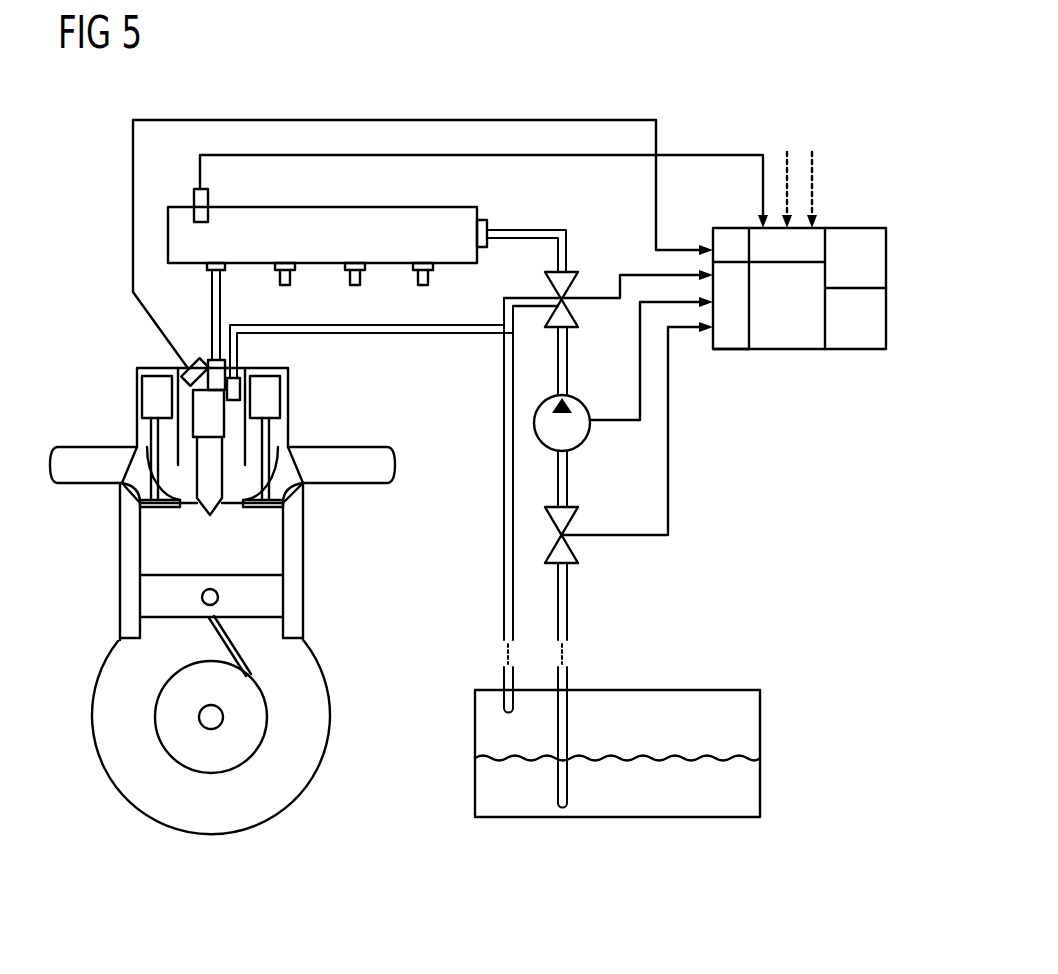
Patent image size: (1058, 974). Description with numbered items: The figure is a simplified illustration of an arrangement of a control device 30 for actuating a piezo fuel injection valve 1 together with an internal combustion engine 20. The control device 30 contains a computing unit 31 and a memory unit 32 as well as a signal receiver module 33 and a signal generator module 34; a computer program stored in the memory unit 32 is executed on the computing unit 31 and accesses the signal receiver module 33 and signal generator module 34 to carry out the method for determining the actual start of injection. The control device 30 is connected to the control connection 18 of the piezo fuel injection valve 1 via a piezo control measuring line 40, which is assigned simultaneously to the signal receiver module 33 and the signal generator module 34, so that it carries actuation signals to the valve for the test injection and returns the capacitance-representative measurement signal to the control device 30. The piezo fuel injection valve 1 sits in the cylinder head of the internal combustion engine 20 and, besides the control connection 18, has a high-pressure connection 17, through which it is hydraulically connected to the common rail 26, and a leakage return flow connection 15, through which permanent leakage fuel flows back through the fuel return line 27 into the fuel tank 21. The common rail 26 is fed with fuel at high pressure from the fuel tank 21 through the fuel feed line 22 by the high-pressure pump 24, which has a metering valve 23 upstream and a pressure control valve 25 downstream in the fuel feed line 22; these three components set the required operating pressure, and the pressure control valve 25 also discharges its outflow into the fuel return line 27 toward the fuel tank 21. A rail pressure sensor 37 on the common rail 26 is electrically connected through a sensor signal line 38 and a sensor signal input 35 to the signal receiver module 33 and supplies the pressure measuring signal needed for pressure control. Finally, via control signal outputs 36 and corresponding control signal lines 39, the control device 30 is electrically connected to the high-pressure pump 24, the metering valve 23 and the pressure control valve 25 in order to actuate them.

The piezo fuel injection valve 1 is at (213, 413).
The leakage return flow connection 15 is at (233, 390).
The high-pressure connection 17 is at (207, 362).
The control connection 18 is at (183, 369).
The internal combustion engine 20 is at (340, 560).
The fuel tank 21 is at (683, 702).
The fuel feed line 22 is at (568, 600).
The metering valve 23 is at (597, 553).
The high-pressure pump 24 is at (578, 440).
The pressure control valve 25 is at (588, 282).
The common rail 26 is at (312, 248).
The fuel return line 27 is at (503, 610).
The control device 30 is at (799, 308).
The computing unit 31 is at (835, 273).
The memory unit 32 is at (853, 337).
The signal receiver module 33 is at (757, 238).
The signal generator module 34 is at (728, 337).
The sensor signal input 35 is at (853, 207).
The control signal outputs 36 is at (700, 365).
The rail pressure sensor 37 is at (209, 201).
The sensor signal line 38 is at (567, 158).
The control signal lines 39 is at (590, 303).
The piezo control measuring line 40 is at (407, 117).